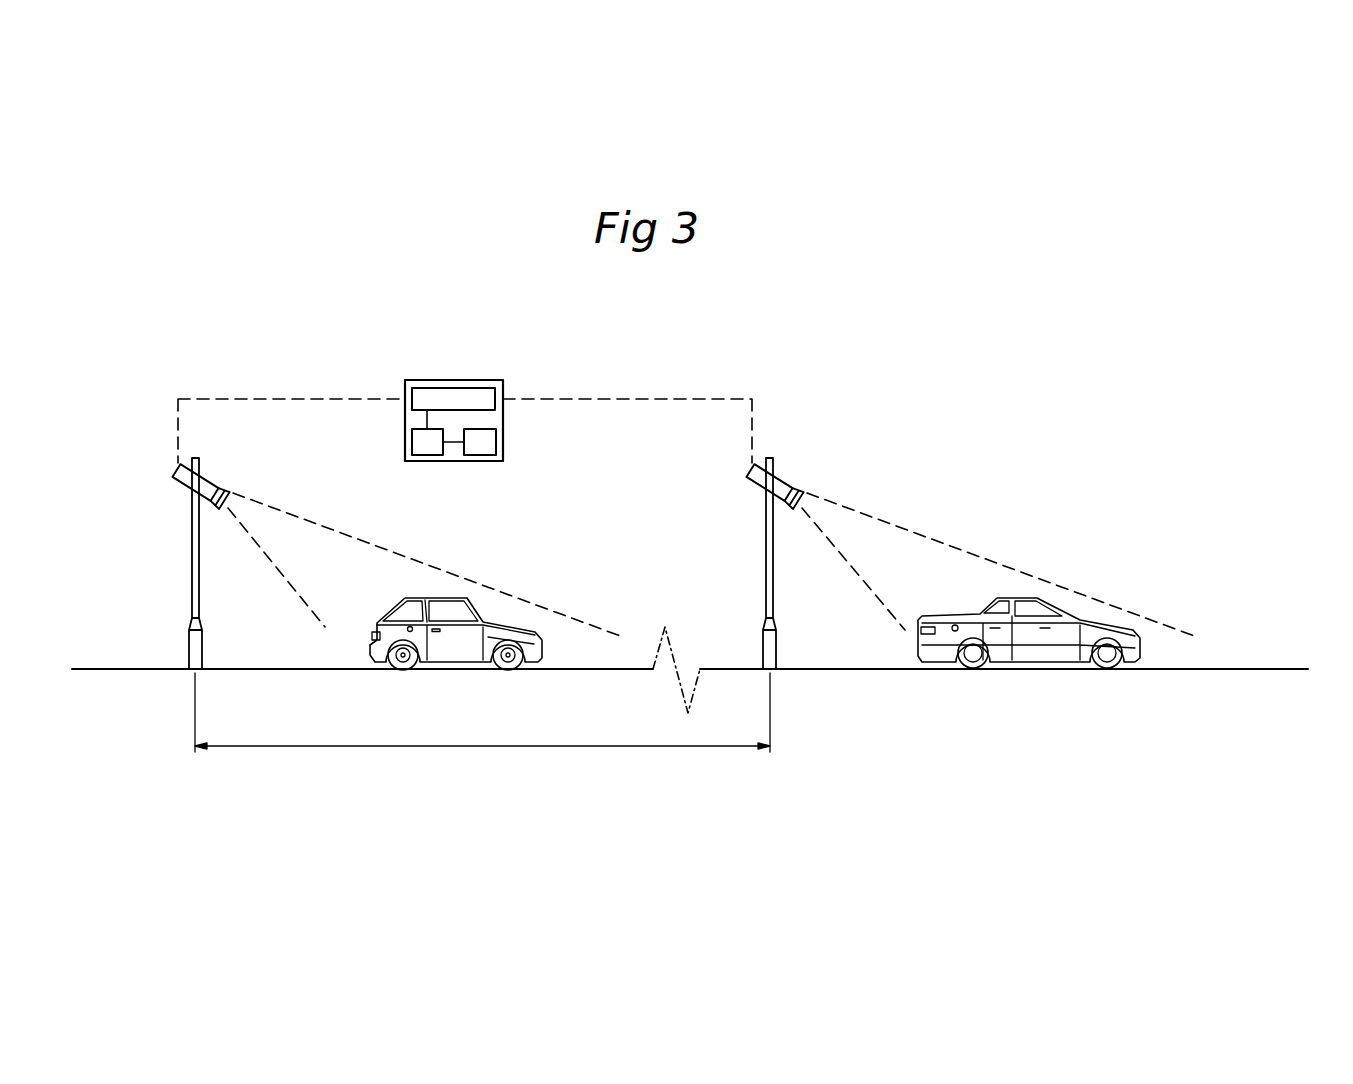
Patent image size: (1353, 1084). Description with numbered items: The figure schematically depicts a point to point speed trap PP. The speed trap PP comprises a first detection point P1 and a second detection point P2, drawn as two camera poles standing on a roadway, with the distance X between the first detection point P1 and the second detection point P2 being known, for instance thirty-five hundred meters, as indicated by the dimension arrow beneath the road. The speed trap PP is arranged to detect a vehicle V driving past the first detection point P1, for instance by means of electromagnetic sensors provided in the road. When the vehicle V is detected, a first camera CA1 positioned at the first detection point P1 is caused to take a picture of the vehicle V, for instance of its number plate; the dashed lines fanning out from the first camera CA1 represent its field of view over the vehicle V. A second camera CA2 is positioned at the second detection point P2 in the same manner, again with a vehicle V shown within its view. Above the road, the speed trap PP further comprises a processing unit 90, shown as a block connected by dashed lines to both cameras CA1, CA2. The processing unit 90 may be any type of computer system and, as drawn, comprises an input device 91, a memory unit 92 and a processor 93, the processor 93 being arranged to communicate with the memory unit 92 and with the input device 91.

The processing unit 90 is at (488, 384).
The input device 91 is at (447, 395).
The memory unit 92 is at (485, 445).
The processor 93 is at (427, 445).
The first camera CA1 is at (208, 482).
The second camera CA2 is at (790, 481).
The point to point speed trap PP is at (648, 475).
The vehicle V is at (503, 612).
The distance X is at (482, 712).
The first detection point P1 is at (192, 776).
The second detection point P2 is at (769, 776).